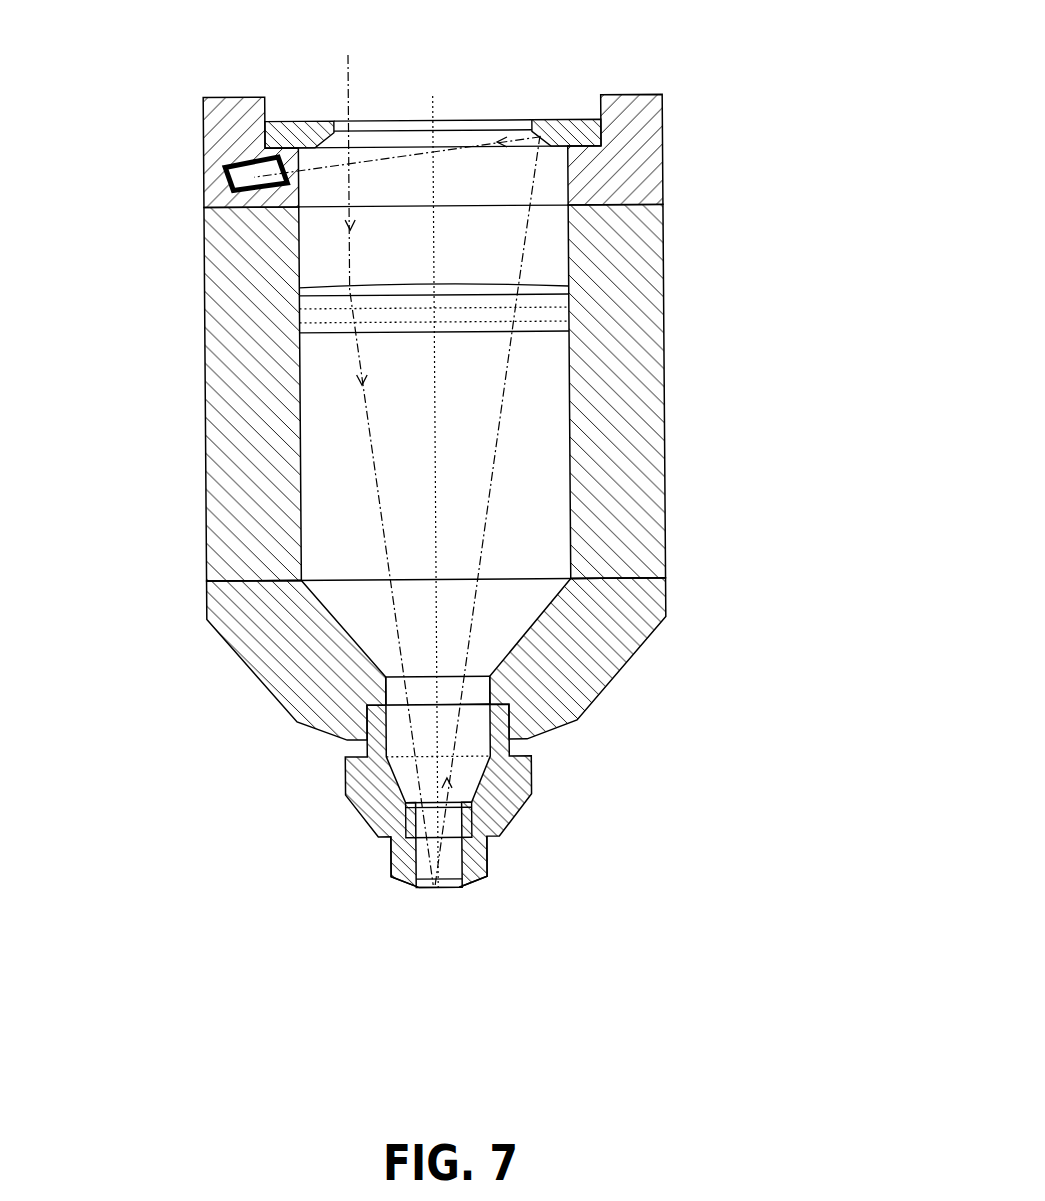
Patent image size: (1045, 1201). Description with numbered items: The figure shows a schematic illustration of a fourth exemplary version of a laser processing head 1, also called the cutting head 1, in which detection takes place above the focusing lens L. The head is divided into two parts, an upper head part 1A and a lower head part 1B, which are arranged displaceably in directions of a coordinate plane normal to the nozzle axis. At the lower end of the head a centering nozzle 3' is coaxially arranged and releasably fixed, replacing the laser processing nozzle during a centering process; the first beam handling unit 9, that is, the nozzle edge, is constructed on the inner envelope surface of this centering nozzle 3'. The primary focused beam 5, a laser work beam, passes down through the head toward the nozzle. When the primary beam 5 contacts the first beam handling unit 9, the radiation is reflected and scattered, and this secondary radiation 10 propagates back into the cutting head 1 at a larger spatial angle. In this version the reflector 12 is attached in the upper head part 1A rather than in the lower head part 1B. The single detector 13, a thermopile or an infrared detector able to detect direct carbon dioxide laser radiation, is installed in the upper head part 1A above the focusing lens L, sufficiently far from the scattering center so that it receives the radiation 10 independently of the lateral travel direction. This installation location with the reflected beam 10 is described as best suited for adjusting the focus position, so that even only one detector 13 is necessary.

The laser processing head 1 is at (516, 417).
The upper head part 1A is at (664, 270).
The lower head part 1B is at (622, 690).
The centering nozzle 3' is at (455, 821).
The primary focused beam 5 is at (366, 440).
The first beam handling unit 9 is at (409, 888).
The secondary radiation 10 is at (495, 440).
The reflector 12 is at (572, 132).
The detector 13 is at (244, 179).
The focusing lens L is at (544, 302).